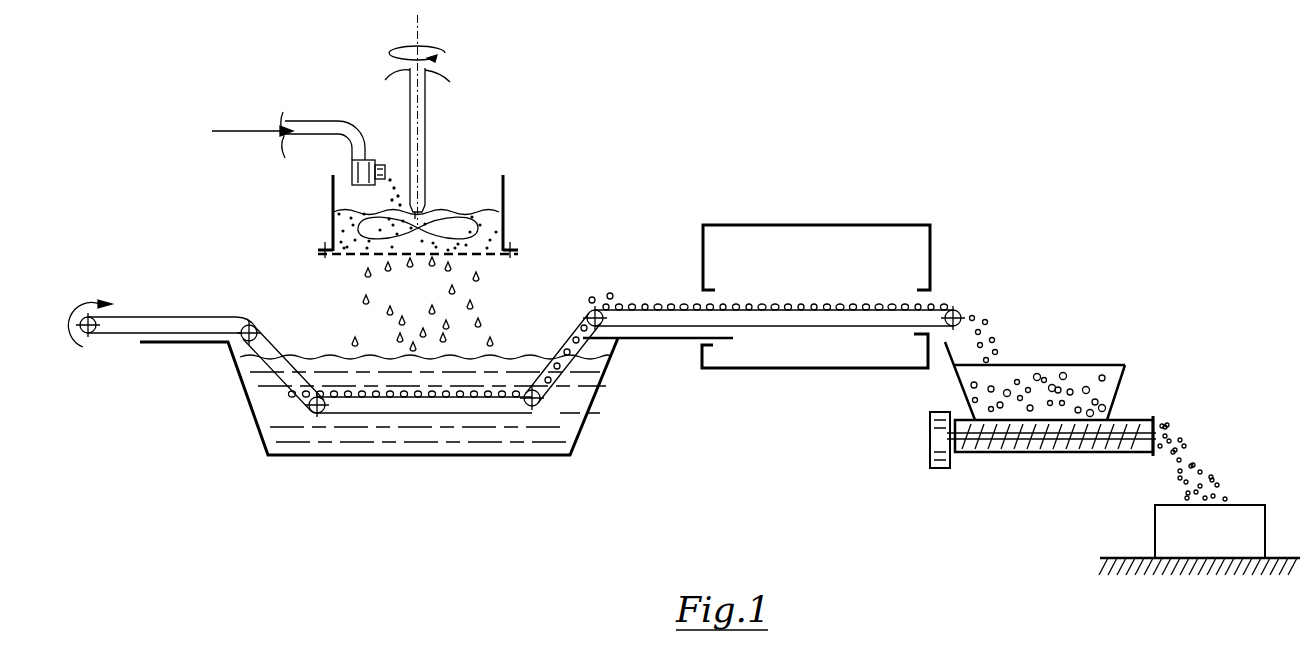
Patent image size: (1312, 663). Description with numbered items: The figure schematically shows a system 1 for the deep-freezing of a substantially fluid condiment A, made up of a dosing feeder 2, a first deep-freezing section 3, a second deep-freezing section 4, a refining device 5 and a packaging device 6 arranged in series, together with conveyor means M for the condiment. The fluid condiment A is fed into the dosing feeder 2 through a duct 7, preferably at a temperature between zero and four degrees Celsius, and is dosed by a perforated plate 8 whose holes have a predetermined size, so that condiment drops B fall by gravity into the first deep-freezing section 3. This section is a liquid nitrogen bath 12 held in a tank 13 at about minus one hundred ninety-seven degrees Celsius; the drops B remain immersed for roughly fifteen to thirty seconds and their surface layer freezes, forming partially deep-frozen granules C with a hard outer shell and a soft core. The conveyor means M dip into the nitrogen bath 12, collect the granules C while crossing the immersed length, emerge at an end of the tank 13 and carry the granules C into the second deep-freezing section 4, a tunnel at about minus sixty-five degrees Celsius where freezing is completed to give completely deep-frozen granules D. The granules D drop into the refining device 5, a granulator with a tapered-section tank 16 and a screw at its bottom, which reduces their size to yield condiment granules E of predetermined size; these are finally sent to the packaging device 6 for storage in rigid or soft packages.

The system 1 is at (645, 135).
The dosing feeder 2 is at (306, 211).
The first deep-freezing section 3 is at (372, 472).
The second deep-freezing section 4 is at (829, 214).
The refining device 5 is at (1006, 466).
The packaging device 6 is at (1177, 523).
The duct 7 is at (325, 128).
The plate 8 is at (360, 256).
The liquid nitrogen bath 12 is at (247, 421).
The tank 13 is at (227, 348).
The tank 16 is at (1108, 390).
The substantially fluid condiment A is at (449, 207).
The condiment drops B is at (477, 317).
The partially deep-frozen granules C is at (500, 390).
The completely deep-frozen granules D is at (970, 315).
The condiment granules of predetermined size E is at (1183, 445).
The conveyor means M is at (633, 348).